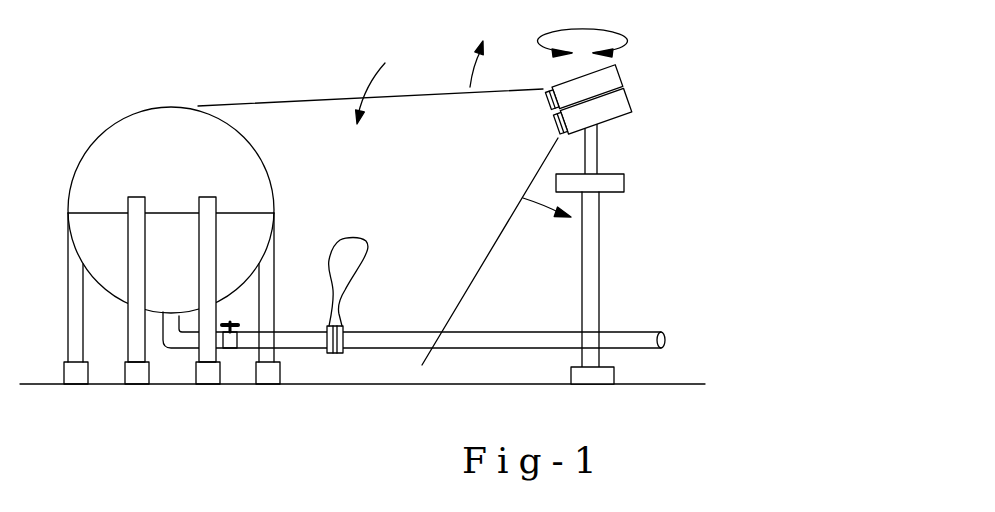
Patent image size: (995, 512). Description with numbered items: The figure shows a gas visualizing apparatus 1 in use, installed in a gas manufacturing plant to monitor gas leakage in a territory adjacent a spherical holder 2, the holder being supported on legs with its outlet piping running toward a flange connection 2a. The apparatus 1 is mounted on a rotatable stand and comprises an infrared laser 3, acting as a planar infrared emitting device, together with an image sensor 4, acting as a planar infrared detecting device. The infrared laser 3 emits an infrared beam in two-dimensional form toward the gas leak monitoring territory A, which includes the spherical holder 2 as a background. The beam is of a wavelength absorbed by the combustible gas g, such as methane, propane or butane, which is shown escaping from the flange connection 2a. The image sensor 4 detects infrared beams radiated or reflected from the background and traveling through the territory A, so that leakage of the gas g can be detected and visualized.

The gas visualizing apparatus 1 is at (658, 60).
The spherical holder 2 is at (188, 105).
The flange connection 2a is at (345, 331).
The infrared laser 3 is at (563, 82).
The image sensor 4 is at (616, 118).
The combustible gas g is at (368, 241).
The gas leak monitoring territory A is at (384, 203).